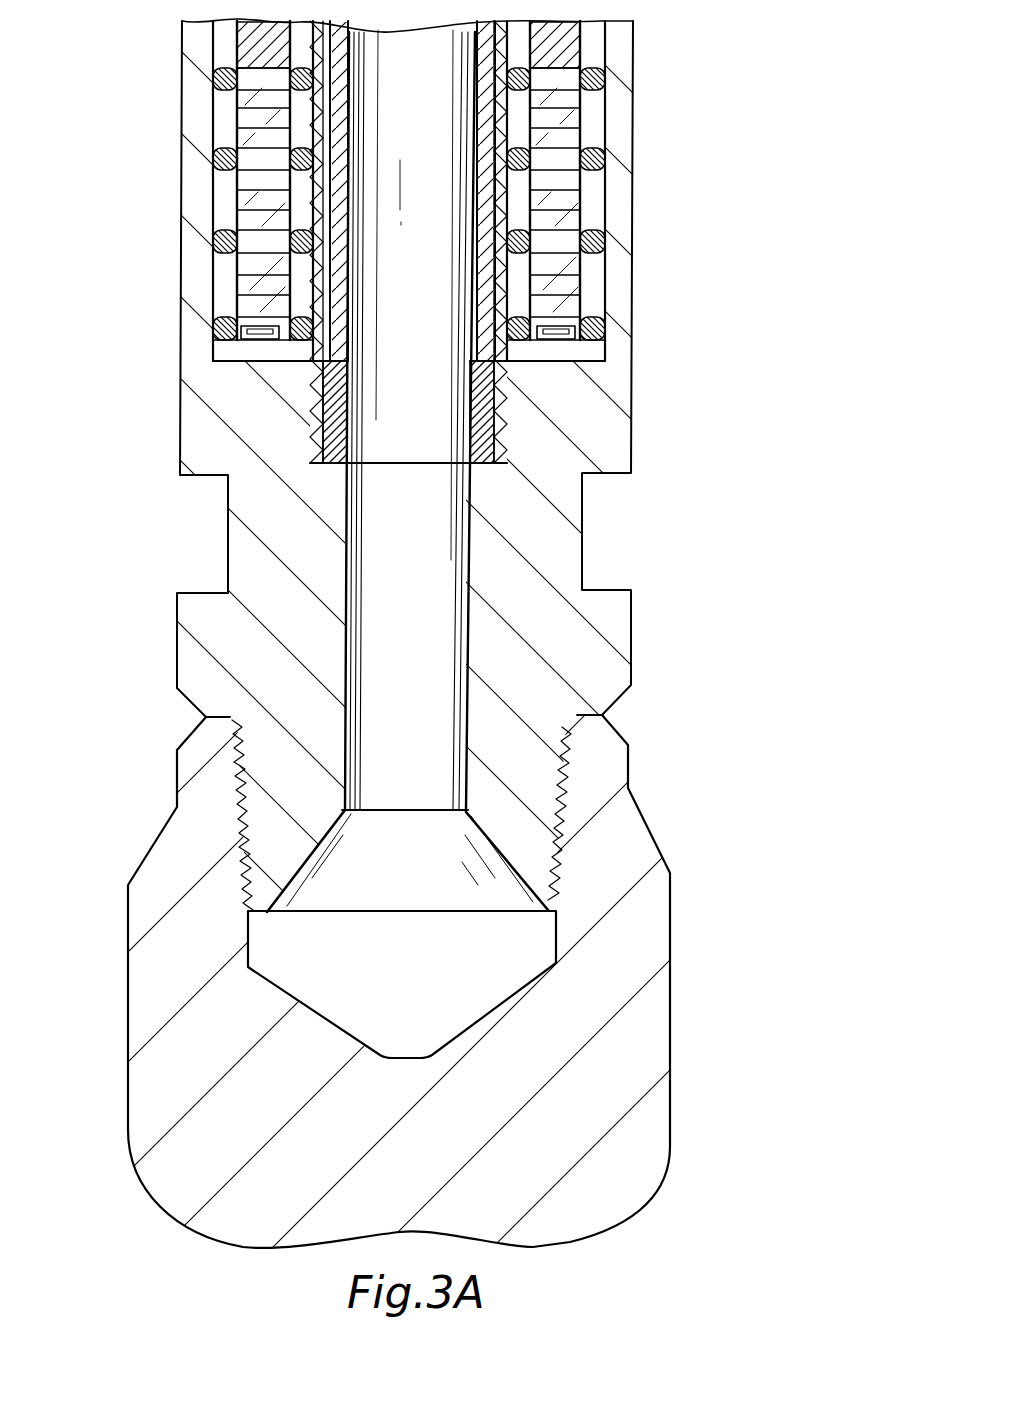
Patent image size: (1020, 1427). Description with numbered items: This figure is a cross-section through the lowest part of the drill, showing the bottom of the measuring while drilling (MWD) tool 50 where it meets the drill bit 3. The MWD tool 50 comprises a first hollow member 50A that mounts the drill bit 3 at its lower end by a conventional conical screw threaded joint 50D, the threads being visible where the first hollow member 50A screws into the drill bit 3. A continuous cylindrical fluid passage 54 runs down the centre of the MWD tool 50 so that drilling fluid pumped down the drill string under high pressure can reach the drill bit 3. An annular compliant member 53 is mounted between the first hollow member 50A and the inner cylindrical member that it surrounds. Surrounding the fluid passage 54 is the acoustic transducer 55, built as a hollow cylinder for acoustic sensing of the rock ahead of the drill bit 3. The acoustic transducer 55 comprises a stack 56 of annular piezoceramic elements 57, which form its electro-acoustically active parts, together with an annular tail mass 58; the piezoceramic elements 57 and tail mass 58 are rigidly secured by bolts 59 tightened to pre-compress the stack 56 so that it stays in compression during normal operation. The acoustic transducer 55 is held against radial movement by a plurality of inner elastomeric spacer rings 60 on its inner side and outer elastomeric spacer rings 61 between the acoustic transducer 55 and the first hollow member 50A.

The drill bit 3 is at (170, 948).
The measuring while drilling (MWD) tool 50 is at (712, 268).
The first hollow member 50A is at (595, 418).
The screw threaded joint 50D is at (240, 826).
The annular compliant member 53 is at (480, 460).
The fluid passage 54 is at (455, 652).
The acoustic transducer 55 is at (386, 189).
The stack 56 is at (582, 193).
The piezoceramic elements 57 is at (568, 266).
The tail mass 58 is at (592, 37).
The bolts 59 is at (560, 340).
The inner elastomeric spacer rings 60 is at (533, 147).
The outer elastomeric spacer rings 61 is at (600, 78).